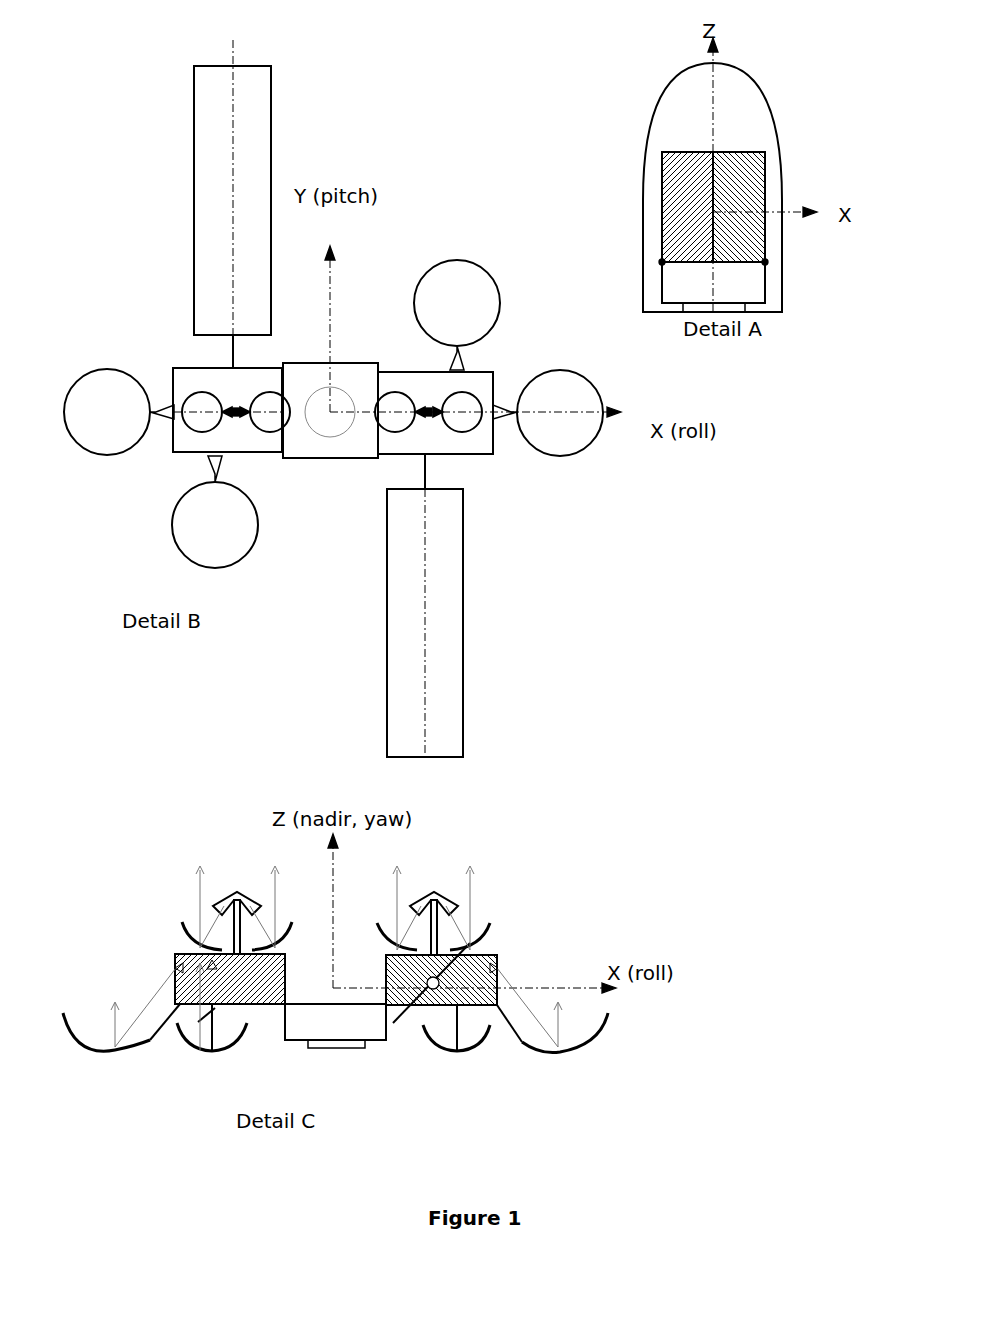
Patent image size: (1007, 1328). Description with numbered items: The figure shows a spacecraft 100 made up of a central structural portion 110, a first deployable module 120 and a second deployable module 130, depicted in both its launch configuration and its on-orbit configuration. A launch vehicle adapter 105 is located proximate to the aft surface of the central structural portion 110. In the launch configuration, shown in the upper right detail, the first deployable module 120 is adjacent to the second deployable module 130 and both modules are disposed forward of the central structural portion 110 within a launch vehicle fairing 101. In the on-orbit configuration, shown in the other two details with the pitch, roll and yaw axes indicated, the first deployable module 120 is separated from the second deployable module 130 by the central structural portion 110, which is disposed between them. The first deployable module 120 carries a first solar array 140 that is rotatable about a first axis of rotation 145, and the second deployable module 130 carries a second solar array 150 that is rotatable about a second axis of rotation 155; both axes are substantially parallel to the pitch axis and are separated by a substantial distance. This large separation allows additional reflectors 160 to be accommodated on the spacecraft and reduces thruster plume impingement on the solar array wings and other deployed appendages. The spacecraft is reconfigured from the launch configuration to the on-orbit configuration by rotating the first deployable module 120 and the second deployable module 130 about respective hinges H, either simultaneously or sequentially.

The spacecraft 100 is at (126, 52).
The launch vehicle fairing 101 is at (659, 117).
The launch vehicle adapter 105 is at (342, 388).
The central structural portion 110 is at (283, 458).
The first deployable module 120 is at (190, 443).
The second deployable module 130 is at (465, 455).
The first solar array 140 is at (194, 213).
The first axis of rotation 145 is at (230, 92).
The second solar array 150 is at (463, 593).
The second axis of rotation 155 is at (425, 622).
The reflectors 160 is at (230, 565).
The hinges H is at (283, 450).